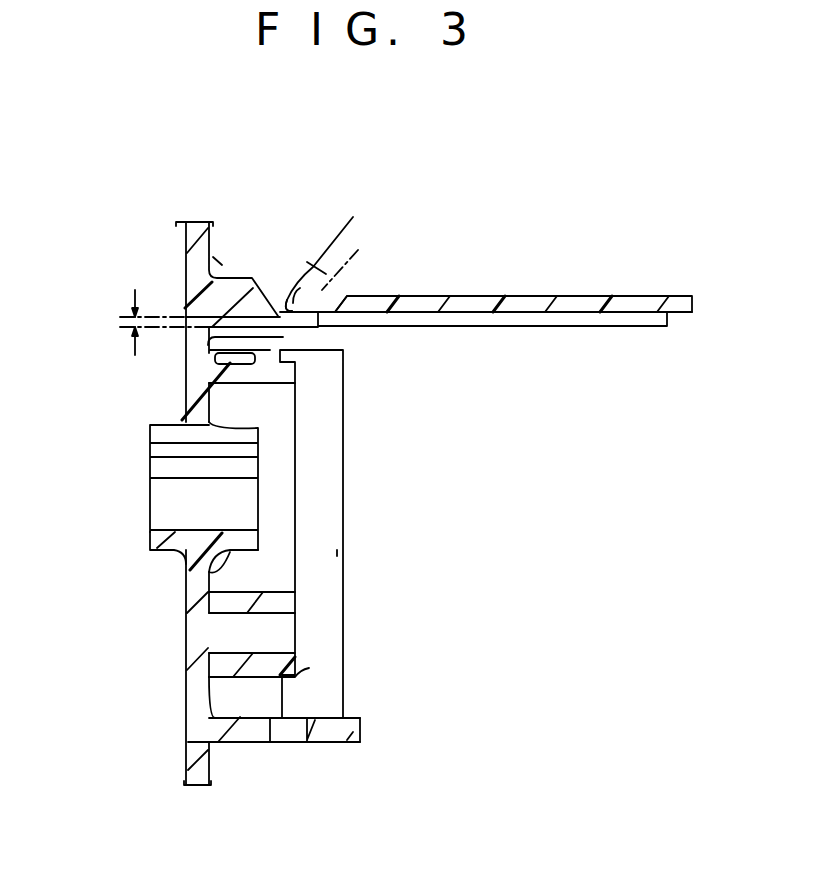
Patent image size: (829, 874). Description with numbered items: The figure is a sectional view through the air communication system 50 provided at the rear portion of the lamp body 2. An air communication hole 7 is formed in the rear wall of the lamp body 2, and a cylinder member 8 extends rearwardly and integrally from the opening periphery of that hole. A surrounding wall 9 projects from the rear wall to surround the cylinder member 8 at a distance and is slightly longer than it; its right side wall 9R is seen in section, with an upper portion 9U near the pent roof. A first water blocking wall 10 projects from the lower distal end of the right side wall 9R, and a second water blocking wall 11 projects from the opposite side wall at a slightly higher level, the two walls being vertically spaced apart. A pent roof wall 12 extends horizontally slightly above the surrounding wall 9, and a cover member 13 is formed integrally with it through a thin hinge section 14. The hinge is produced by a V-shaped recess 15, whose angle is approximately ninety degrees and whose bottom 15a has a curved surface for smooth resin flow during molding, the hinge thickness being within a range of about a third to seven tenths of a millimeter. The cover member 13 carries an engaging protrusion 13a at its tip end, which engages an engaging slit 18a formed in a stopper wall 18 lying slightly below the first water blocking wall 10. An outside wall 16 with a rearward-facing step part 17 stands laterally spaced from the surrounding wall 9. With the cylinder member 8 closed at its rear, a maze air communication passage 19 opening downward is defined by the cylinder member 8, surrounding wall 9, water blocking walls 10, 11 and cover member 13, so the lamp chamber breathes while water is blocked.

The air communication system 50 is at (113, 190).
The lamp body 2 is at (193, 754).
The pent roof wall 12 is at (232, 282).
The thin hinge section 14 is at (208, 340).
The cover member 13 is at (580, 298).
The engaging protrusion 13a is at (683, 312).
The recess 15 is at (322, 290).
The bottom of the recess 15a is at (297, 283).
The surrounding wall 9 is at (300, 343).
The clamp upper portion 9U is at (205, 356).
The right side wall 9R is at (295, 437).
The air communication hole 7 is at (193, 443).
The cylinder member 8 is at (230, 552).
The second water blocking wall 11 is at (278, 592).
The first water blocking wall 10 is at (270, 656).
The outside wall 16 is at (337, 553).
The air communication passage 19 is at (267, 563).
The step part 17 is at (287, 697).
The engaging slit 18a is at (276, 724).
The stopper wall 18 is at (335, 733).